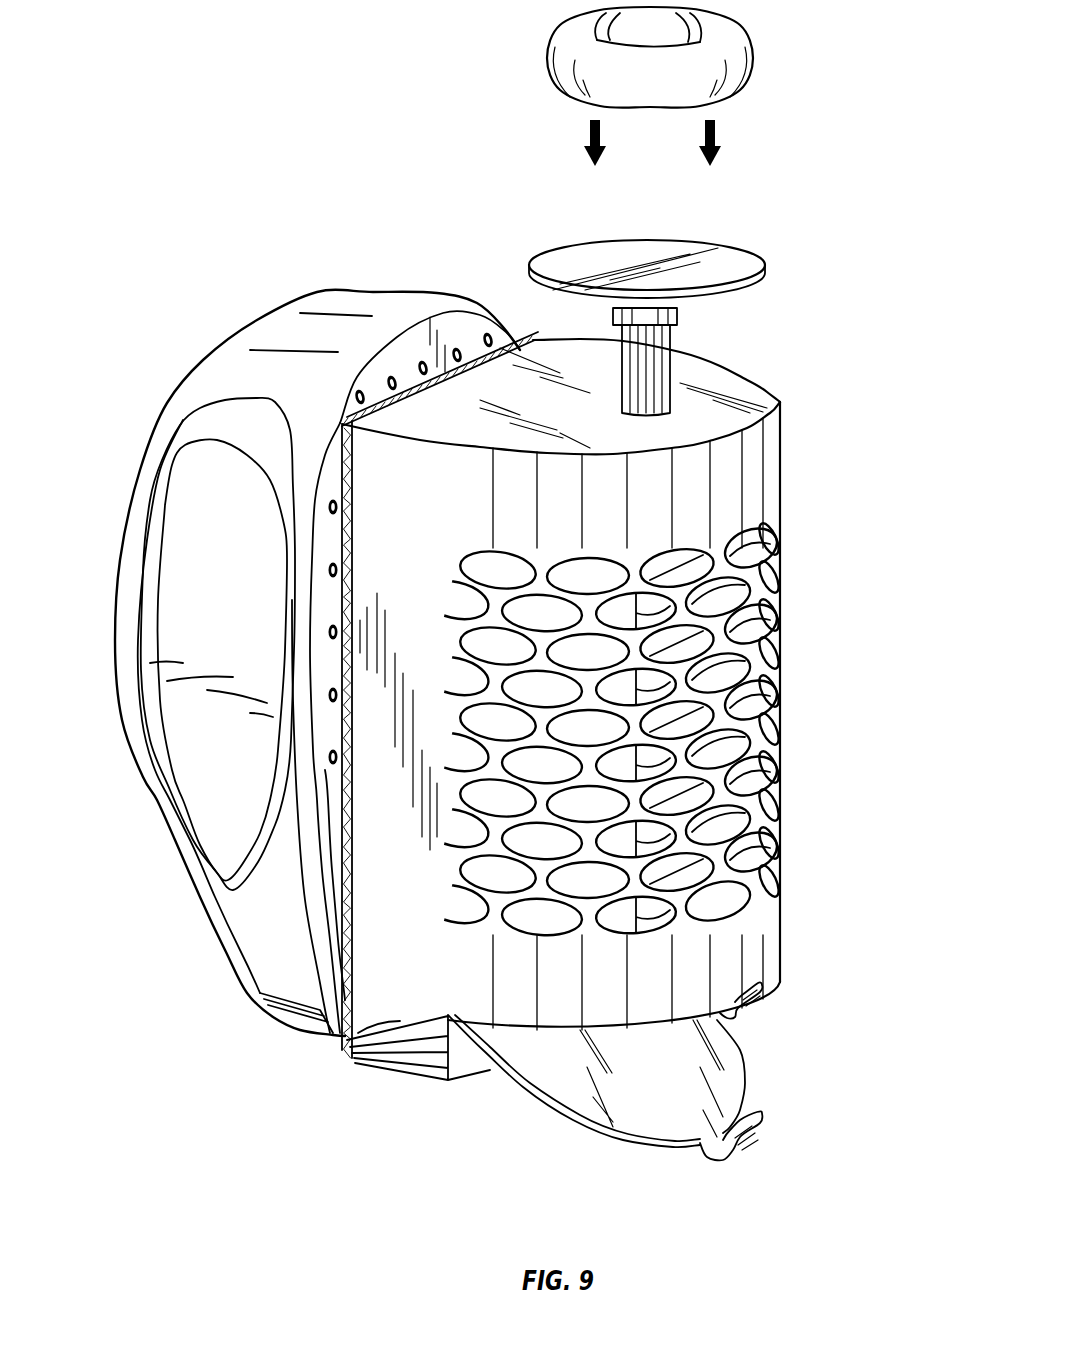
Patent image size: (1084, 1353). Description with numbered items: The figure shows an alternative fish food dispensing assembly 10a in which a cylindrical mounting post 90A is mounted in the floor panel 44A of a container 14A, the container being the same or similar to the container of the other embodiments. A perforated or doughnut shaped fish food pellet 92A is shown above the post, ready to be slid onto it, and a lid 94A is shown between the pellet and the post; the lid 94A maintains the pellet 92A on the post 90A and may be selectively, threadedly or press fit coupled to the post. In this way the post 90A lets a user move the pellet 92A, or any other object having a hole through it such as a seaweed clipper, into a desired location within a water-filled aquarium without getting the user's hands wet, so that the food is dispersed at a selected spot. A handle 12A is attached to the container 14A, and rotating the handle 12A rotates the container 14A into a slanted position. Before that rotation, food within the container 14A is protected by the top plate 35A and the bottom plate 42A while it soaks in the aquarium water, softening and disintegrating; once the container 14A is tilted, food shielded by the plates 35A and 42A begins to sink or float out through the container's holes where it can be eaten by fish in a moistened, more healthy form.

The dispenser assembly 10a is at (822, 338).
The handle 12A is at (170, 547).
The container 14A is at (345, 1062).
The top plate 35A is at (780, 948).
The bottom plate 42A is at (769, 496).
The floor panel 44A is at (690, 420).
The mounting post 90A is at (663, 350).
The fish food pellet 92A is at (755, 40).
The lid 94A is at (745, 265).